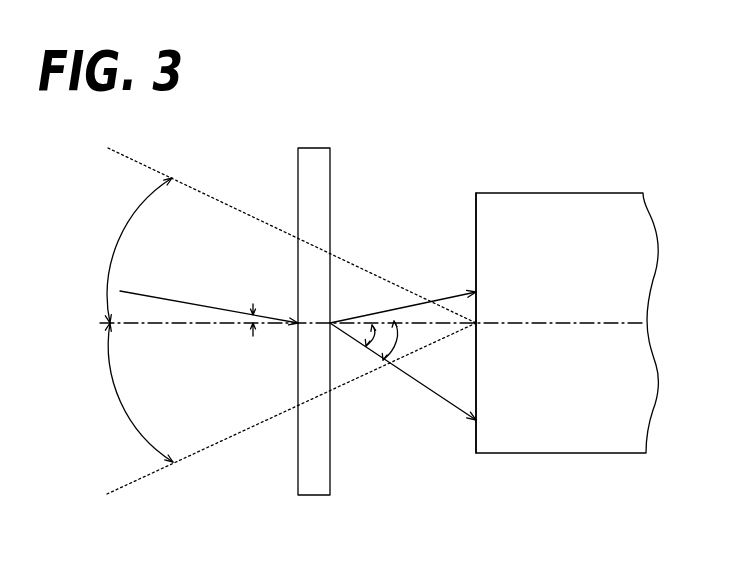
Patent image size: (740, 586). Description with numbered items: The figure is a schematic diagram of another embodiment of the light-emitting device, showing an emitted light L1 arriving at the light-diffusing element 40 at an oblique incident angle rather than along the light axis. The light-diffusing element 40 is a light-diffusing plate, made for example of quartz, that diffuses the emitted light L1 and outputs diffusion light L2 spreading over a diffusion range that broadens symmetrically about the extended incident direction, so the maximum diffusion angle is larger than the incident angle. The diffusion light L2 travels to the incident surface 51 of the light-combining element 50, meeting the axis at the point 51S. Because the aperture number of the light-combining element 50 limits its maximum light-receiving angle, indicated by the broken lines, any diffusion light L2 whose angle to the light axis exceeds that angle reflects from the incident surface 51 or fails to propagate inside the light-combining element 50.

The light-diffusing element 40 is at (315, 496).
The light-combining element 50 is at (569, 455).
The incident surface 51 is at (475, 432).
The point on incident surface on optical axis 51S is at (563, 323).
The emitted light L1 is at (190, 303).
The diffusion light L2 is at (450, 297).